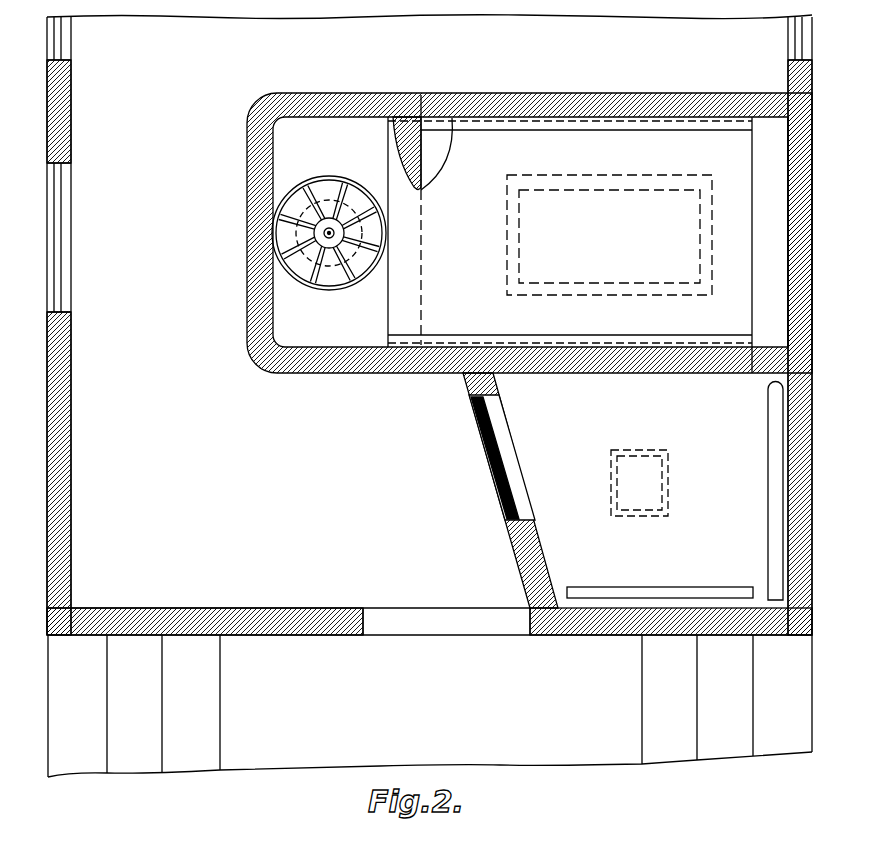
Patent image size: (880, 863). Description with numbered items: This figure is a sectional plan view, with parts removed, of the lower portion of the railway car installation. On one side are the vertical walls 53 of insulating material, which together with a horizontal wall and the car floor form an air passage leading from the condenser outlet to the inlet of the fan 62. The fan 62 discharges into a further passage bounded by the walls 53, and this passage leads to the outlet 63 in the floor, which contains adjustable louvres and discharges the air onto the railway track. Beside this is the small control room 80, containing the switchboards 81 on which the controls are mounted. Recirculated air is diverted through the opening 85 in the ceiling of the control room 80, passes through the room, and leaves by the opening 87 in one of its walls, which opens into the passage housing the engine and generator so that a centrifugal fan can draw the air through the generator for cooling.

The vertical walls 53 is at (338, 118).
The fan 62 is at (330, 196).
The outlet 63 is at (612, 205).
The control room 80 is at (603, 429).
The switchboards 81 is at (768, 495).
The opening 85 is at (668, 478).
The opening 87 is at (766, 372).